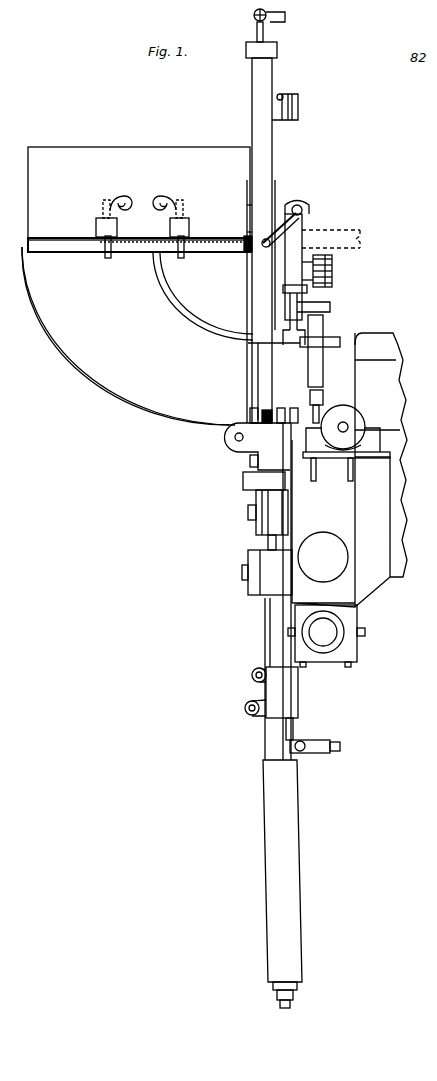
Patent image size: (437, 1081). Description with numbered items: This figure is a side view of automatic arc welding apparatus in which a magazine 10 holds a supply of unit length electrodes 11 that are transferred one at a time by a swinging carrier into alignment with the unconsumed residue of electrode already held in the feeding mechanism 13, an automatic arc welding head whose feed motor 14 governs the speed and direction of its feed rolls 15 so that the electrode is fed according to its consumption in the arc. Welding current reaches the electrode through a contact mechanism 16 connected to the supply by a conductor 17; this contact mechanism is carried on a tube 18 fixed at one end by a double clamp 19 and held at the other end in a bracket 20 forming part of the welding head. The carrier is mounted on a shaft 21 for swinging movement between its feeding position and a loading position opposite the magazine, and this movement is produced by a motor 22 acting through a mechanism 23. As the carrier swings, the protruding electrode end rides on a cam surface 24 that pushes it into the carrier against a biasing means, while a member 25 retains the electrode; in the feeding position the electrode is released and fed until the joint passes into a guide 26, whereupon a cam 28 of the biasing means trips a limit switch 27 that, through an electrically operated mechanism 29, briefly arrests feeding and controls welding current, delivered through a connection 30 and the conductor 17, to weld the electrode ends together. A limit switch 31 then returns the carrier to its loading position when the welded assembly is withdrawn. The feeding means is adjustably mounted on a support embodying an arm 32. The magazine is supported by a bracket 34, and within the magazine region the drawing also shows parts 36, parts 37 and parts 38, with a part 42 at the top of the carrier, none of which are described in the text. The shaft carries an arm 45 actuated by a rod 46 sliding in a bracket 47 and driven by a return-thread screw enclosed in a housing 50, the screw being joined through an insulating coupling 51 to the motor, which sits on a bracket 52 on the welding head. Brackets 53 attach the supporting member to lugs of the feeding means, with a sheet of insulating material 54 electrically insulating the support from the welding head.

The magazine 10 is at (135, 147).
The unit length electrodes 11 is at (62, 252).
The feeding mechanism 13 is at (384, 582).
The feed motor 14 is at (400, 375).
The feed rolls 15 is at (262, 528).
The contact mechanism 16 is at (300, 895).
The conductor 17 is at (318, 753).
The tube 18 is at (265, 632).
The double clamp 19 is at (298, 683).
The bracket 20 is at (248, 588).
The shaft 21 is at (262, 250).
The motor 22 is at (360, 420).
The mechanism 23 is at (323, 337).
The cam surface 24 is at (112, 386).
The member 25 is at (205, 315).
The guide 26 is at (243, 485).
The limit switch 27 is at (298, 103).
The cam 28 is at (273, 70).
The electrically operated mechanism 29 is at (332, 270).
The connection 30 is at (254, 14).
The limit switch 31 is at (292, 408).
The arm 32 is at (335, 638).
The bracket 34 is at (254, 210).
The pin 36 is at (108, 258).
The block 37 is at (96, 228).
The spiral 38 is at (158, 195).
The top block 42 is at (277, 48).
The arm 45 is at (308, 198).
The rod 46 is at (302, 240).
The bracket 47 is at (283, 290).
The housing 50 is at (323, 362).
The coupling 51 is at (323, 397).
The bracket 52 is at (335, 458).
The brackets 53 is at (258, 380).
The sheet of insulating material 54 is at (250, 343).